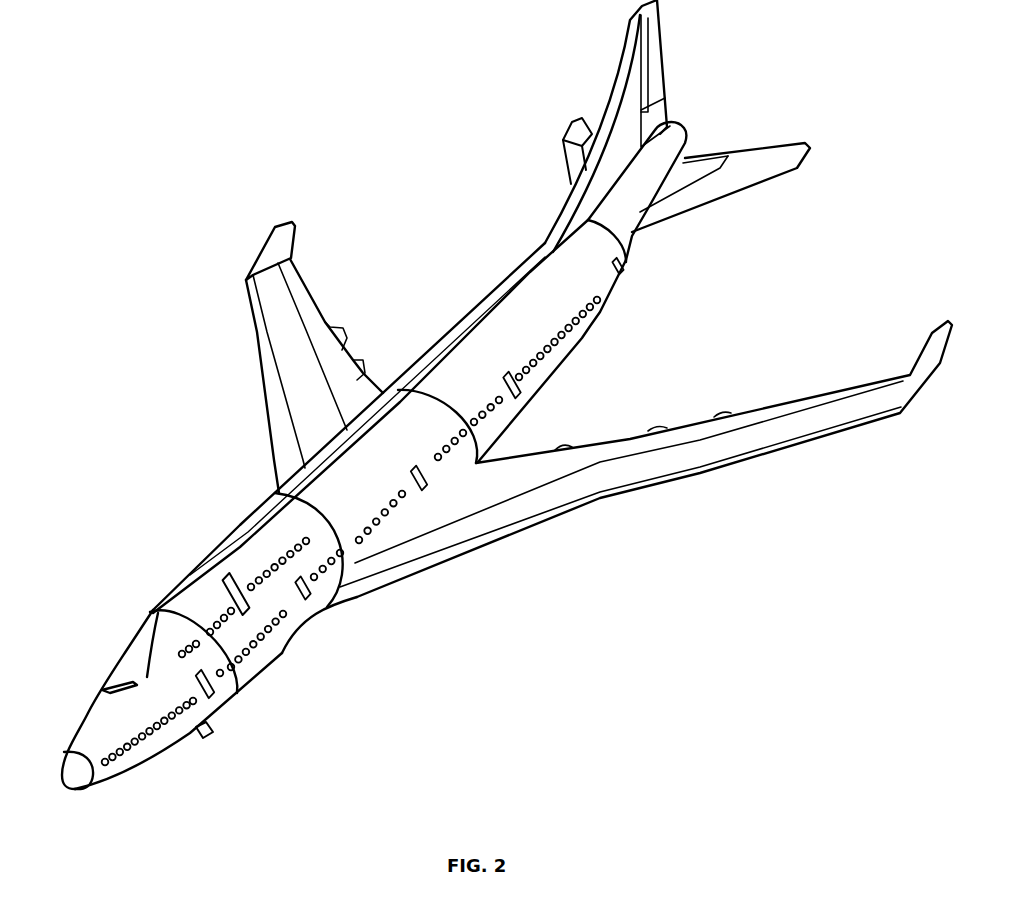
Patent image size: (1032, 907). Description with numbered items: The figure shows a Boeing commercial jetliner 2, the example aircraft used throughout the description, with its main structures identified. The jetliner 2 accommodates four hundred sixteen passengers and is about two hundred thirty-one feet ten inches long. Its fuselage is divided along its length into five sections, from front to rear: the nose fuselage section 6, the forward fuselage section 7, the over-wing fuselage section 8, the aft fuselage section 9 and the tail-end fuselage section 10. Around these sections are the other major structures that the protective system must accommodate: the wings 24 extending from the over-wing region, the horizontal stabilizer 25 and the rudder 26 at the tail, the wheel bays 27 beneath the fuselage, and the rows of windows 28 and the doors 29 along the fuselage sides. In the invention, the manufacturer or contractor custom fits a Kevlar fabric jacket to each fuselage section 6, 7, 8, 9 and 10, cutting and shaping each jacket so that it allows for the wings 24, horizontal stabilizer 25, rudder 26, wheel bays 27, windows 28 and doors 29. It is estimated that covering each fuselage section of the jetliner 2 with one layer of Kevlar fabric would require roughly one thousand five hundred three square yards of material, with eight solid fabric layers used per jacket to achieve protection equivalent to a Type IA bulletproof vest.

The Boeing 747-400 commercial jetliner 2 is at (487, 300).
The nose fuselage section 6 is at (232, 698).
The forward fuselage section 7 is at (290, 655).
The over-wing fuselage section 8 is at (420, 510).
The aft fuselage section 9 is at (600, 307).
The tail-end fuselage section 10 is at (640, 247).
The wings and/or assembly site 24 is at (418, 557).
The horizontal stabilizer and/or assembly site 25 is at (753, 148).
The rudder and/or assembly site 26 is at (664, 62).
The wheel bays 27 is at (207, 733).
The windows 28 is at (540, 364).
The doors 29 is at (240, 598).